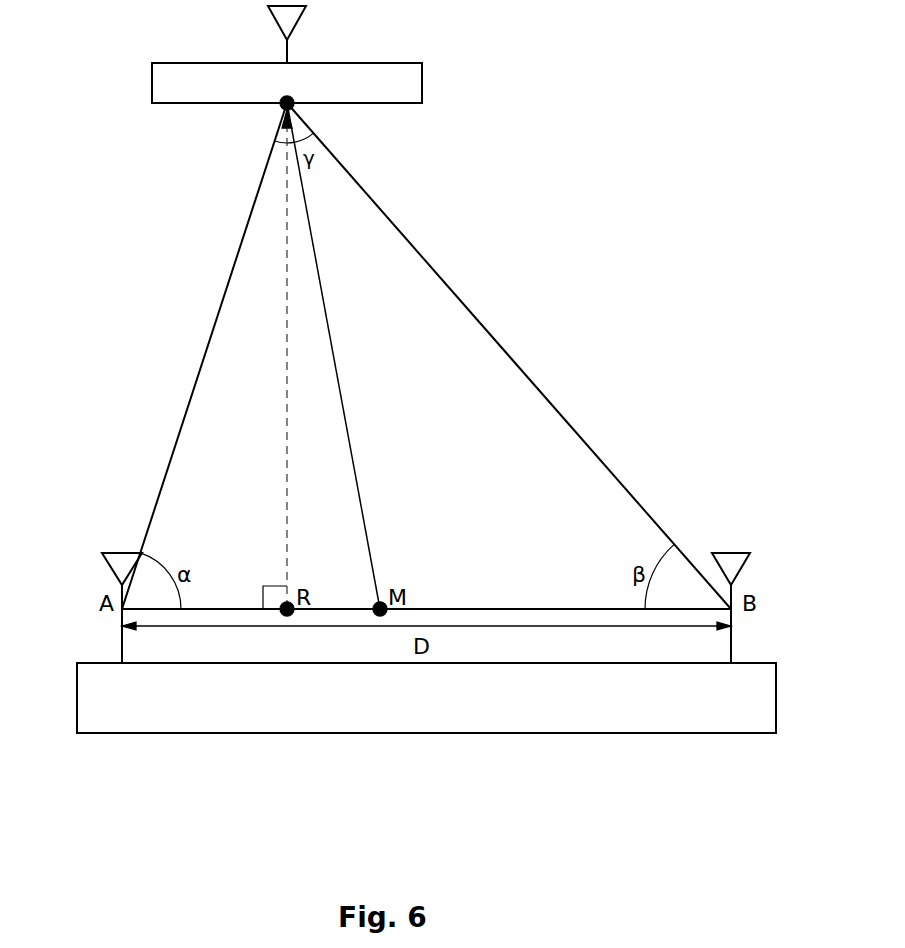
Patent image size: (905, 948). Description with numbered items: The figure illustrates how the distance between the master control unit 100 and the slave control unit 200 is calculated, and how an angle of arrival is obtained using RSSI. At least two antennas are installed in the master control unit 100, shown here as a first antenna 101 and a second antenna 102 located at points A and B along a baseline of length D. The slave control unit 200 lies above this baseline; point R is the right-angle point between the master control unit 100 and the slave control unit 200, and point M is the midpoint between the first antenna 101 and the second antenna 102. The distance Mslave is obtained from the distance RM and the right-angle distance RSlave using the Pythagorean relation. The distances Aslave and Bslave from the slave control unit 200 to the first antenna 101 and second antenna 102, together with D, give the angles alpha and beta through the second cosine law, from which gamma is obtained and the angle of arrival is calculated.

The slave control unit 200 is at (422, 85).
The master control unit 100 is at (443, 733).
The first antenna 101 is at (120, 569).
The second antenna 102 is at (734, 565).